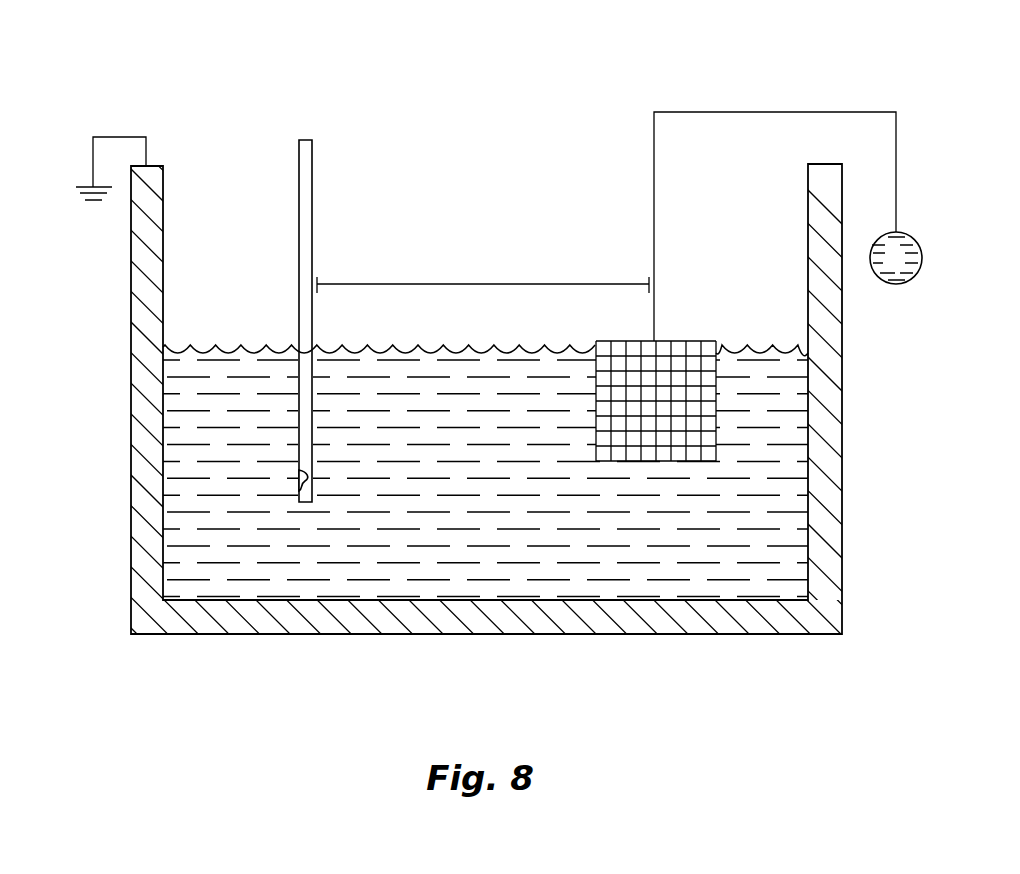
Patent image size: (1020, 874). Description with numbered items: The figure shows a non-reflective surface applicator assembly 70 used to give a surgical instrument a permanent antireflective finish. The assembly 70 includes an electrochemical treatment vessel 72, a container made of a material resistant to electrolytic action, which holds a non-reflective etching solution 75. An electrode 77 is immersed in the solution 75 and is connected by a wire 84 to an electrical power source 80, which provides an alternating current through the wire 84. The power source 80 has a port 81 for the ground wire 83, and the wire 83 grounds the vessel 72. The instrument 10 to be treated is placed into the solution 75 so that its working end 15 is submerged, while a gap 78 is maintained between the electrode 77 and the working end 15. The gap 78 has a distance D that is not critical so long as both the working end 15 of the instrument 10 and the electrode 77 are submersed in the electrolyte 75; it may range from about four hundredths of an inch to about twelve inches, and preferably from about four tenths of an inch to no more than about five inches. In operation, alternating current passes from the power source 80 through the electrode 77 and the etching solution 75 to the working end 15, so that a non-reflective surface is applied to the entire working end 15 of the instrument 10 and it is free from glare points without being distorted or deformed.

The non-reflective surface applicator assembly 70 is at (493, 95).
The electrochemical treatment vessel 72 is at (527, 635).
The non-reflective etching solution 75 is at (497, 435).
The instrument 10 is at (300, 138).
The working end 15 is at (300, 423).
The electrode 77 is at (678, 340).
The gap 78 is at (475, 265).
The electrical power source 80 is at (890, 287).
The port 81 is at (93, 167).
The ground wire 83 is at (113, 137).
The marking wire 84 is at (770, 112).